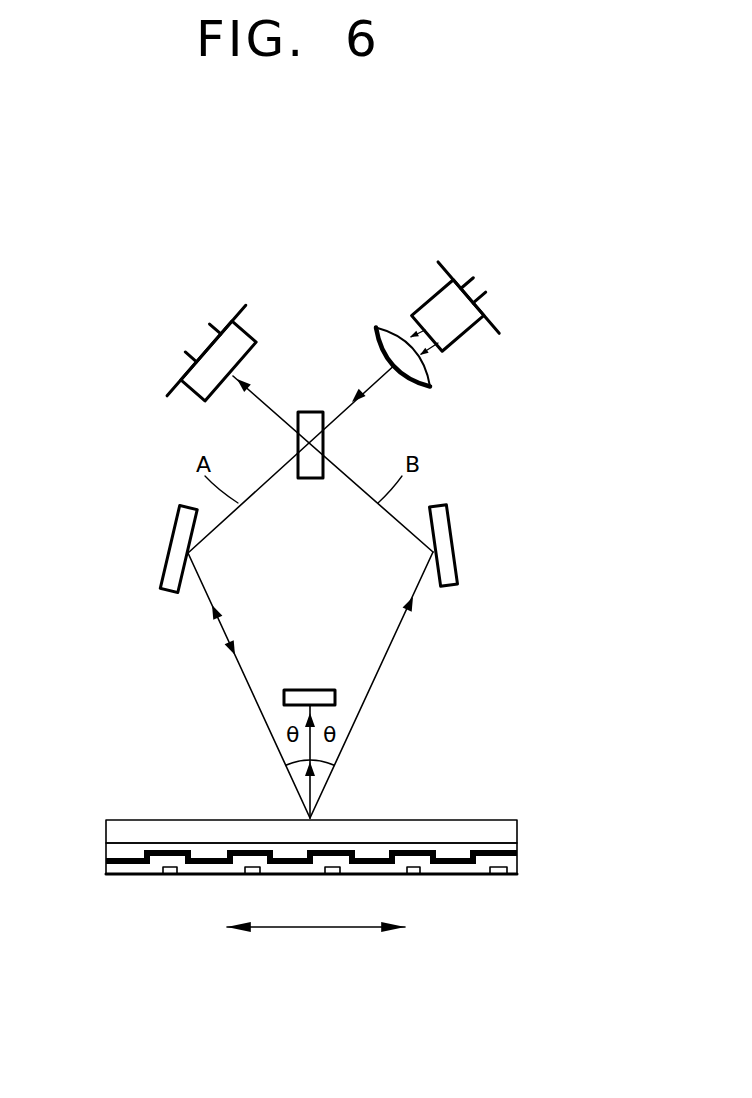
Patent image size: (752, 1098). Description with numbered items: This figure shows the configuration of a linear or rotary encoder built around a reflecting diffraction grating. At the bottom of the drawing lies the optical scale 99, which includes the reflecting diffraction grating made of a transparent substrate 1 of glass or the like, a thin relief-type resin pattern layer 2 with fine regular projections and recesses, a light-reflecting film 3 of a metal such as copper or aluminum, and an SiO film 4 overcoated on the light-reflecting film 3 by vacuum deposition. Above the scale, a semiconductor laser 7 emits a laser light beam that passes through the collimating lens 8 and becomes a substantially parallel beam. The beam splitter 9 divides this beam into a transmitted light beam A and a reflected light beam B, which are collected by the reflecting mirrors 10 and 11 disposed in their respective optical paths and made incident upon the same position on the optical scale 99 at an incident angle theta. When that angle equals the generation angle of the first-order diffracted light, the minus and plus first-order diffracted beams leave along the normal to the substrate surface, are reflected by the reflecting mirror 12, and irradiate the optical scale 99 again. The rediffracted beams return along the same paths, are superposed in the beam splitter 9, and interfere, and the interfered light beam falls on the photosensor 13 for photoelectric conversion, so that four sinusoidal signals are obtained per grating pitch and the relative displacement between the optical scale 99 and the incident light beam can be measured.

The transparent substrate 1 is at (507, 830).
The relief-type resin pattern layer 2 is at (515, 847).
The light-reflecting film 3 is at (517, 857).
The SiO film 4 is at (510, 870).
The semiconductor laser 7 is at (473, 335).
The collimating lens 8 is at (430, 387).
The beam splitter 9 is at (309, 410).
The reflecting mirror 10 is at (168, 556).
The reflecting mirror 11 is at (452, 553).
The reflecting mirror 12 is at (309, 688).
The photosensor 13 is at (232, 330).
The optical scale 99 is at (310, 858).